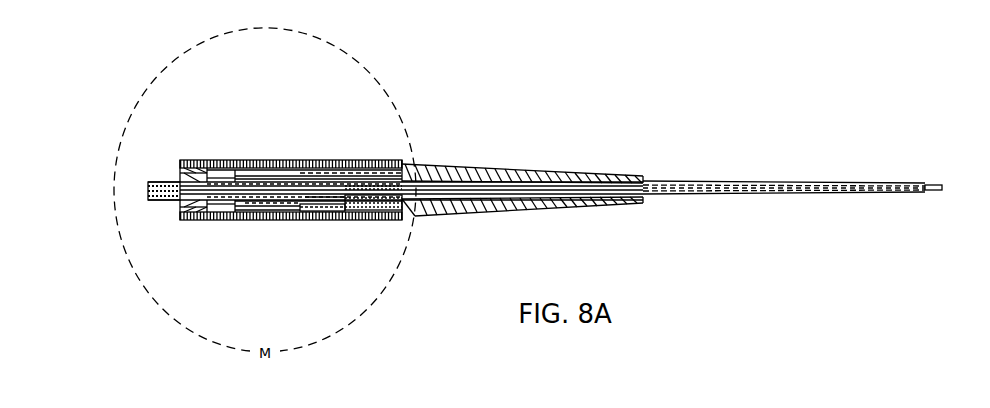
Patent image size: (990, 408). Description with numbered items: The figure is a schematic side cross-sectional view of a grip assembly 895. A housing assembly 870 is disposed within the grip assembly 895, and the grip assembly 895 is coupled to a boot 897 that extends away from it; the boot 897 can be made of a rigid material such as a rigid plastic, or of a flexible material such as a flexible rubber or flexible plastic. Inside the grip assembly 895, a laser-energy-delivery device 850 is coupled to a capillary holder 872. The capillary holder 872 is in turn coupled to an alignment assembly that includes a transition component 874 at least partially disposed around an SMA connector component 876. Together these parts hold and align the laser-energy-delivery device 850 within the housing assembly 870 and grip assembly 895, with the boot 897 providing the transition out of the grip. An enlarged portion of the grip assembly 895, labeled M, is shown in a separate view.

The grip assembly 895 is at (276, 159).
The housing assembly 870 is at (236, 172).
The capillary holder 872 is at (208, 209).
The laser-energy-delivery device 850 is at (271, 203).
The transition component 874 is at (313, 204).
The SMA connector component 876 is at (349, 202).
The boot 897 is at (469, 166).